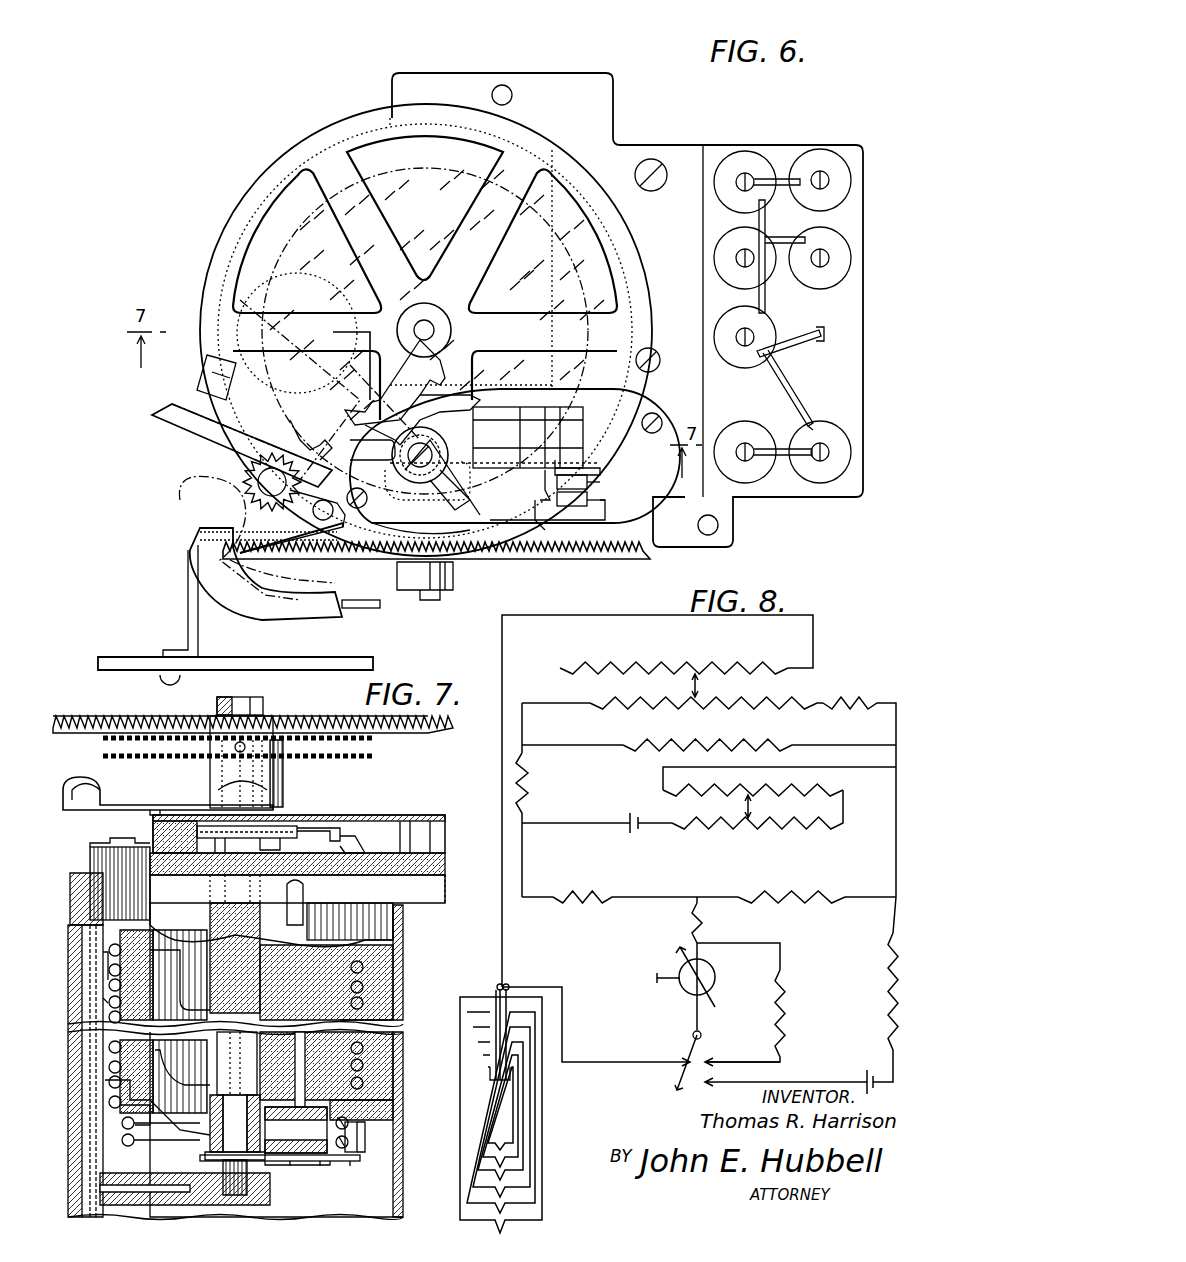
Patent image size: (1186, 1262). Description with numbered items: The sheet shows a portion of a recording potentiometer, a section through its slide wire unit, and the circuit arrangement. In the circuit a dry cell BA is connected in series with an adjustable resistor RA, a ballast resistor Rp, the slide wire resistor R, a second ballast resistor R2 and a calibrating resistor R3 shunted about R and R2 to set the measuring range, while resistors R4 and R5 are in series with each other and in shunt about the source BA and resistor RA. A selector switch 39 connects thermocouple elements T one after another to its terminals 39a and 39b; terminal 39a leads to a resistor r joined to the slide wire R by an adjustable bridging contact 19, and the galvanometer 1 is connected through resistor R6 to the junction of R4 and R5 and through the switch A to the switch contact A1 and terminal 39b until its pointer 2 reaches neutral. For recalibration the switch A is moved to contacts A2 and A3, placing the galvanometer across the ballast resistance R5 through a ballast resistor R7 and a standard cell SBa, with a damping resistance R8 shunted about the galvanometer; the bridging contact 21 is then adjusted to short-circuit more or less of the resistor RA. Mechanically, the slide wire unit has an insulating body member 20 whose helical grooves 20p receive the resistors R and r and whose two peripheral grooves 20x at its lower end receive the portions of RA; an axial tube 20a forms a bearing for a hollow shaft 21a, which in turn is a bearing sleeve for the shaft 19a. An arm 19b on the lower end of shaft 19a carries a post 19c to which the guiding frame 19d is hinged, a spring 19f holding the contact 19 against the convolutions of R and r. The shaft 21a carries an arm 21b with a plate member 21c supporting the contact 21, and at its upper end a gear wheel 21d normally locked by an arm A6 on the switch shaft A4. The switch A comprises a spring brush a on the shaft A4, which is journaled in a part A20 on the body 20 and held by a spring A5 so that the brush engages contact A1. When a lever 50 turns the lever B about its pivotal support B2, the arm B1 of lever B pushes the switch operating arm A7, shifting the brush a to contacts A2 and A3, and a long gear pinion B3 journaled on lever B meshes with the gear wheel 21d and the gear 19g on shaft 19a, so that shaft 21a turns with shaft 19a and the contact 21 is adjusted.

In FIG. 8, the bridging contact 19 is at (700, 690).
In FIG. 7, the shaft 19a is at (220, 692).
In FIG. 7, the arm 19b is at (100, 1198).
In FIG. 7, the post 19c is at (95, 1120).
In FIG. 7, the bridging contact supporting and guiding member 19d is at (108, 965).
In FIG. 7, the spring 19f is at (108, 1005).
In FIG. 6, the gear 19g is at (426, 330).
In FIG. 7, the gear 19g is at (380, 738).
In FIG. 7, the body member 20 is at (345, 1025).
In FIG. 7, the helical grooves 20p is at (363, 1047).
In FIG. 7, the peripheral grooves 20x is at (296, 1130).
In FIG. 7, the tube 20a is at (285, 1160).
In FIG. 8, the recalibration bridging contact 21 is at (758, 815).
In FIG. 7, the tubular shaft 21a is at (255, 1160).
In FIG. 7, the arm 21b is at (290, 1168).
In FIG. 7, the plate member 21c is at (365, 1138).
In FIG. 6, the gear wheel 21d is at (290, 260).
In FIG. 7, the gear wheel 21d is at (375, 758).
In FIG. 6, the lever 50 is at (382, 604).
In FIG. 6, the switch A is at (525, 505).
In FIG. 7, the switch A is at (350, 828).
In FIG. 8, the switch A is at (688, 1050).
In FIG. 6, the switch contact A1 is at (560, 412).
In FIG. 8, the switch contact A1 is at (678, 1070).
In FIG. 6, the contact A2 is at (590, 476).
In FIG. 8, the contact A2 is at (722, 1060).
In FIG. 6, the contact A3 is at (590, 495).
In FIG. 8, the contact A3 is at (702, 1056).
In FIG. 6, the shaft A4 is at (430, 400).
In FIG. 6, the spring A5 is at (535, 520).
In FIG. 6, the arm A6 is at (490, 520).
In FIG. 7, the arm A6 is at (283, 785).
In FIG. 6, the switch operating arm A7 is at (215, 415).
In FIG. 7, the switch operating arm A7 is at (62, 783).
In FIG. 6, the part A20 is at (478, 540).
In FIG. 7, the part A20 is at (428, 812).
In FIG. 6, the spring switch blade or brush a is at (545, 475).
In FIG. 7, the spring switch blade or brush a is at (362, 840).
In FIG. 6, the lever B is at (205, 598).
In FIG. 6, the arm B1 is at (170, 425).
In FIG. 6, the pivotal support B2 is at (325, 560).
In FIG. 6, the long gear pinion B3 is at (248, 488).
In FIG. 7, the slide wire resistor R is at (363, 968).
In FIG. 8, the slide wire resistor R is at (695, 708).
In FIG. 8, the ballast resistor Rp is at (530, 790).
In FIG. 8, the ballast resistor R2 is at (835, 708).
In FIG. 8, the calibrating resistor R3 is at (718, 745).
In FIG. 8, the resistor R4 is at (578, 893).
In FIG. 8, the ballast resistance R5 is at (780, 905).
In FIG. 8, the resistor R6 is at (705, 915).
In FIG. 8, the ballast resistor R7 is at (888, 992).
In FIG. 8, the resistance R8 is at (782, 995).
In FIG. 7, the adjustable resistor RA is at (350, 1125).
In FIG. 8, the adjustable resistor RA is at (720, 835).
In FIG. 7, the resistor r is at (363, 1003).
In FIG. 8, the resistor r is at (645, 665).
In FIG. 8, the source of electromotive force BA is at (638, 818).
In FIG. 8, the standard cell SBa is at (870, 1072).
In FIG. 8, the thermocouple elements T is at (520, 1185).
In FIG. 8, the galvanometer 1 is at (660, 978).
In FIG. 8, the galvanometer pointer 2 is at (675, 955).
In FIG. 8, the selector switch 39 is at (500, 1035).
In FIG. 8, the switch terminal 39a is at (494, 985).
In FIG. 8, the switch terminal 39b is at (508, 985).